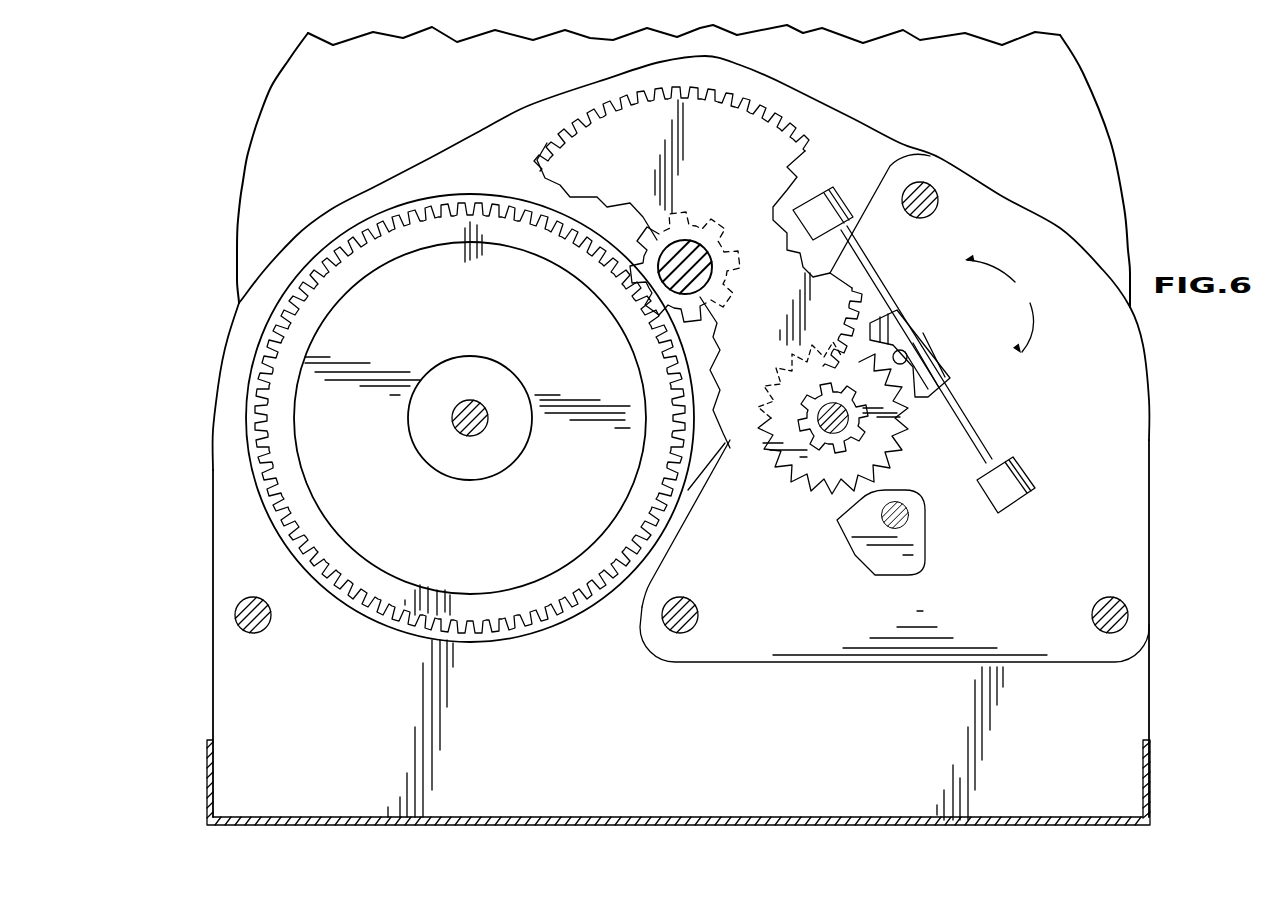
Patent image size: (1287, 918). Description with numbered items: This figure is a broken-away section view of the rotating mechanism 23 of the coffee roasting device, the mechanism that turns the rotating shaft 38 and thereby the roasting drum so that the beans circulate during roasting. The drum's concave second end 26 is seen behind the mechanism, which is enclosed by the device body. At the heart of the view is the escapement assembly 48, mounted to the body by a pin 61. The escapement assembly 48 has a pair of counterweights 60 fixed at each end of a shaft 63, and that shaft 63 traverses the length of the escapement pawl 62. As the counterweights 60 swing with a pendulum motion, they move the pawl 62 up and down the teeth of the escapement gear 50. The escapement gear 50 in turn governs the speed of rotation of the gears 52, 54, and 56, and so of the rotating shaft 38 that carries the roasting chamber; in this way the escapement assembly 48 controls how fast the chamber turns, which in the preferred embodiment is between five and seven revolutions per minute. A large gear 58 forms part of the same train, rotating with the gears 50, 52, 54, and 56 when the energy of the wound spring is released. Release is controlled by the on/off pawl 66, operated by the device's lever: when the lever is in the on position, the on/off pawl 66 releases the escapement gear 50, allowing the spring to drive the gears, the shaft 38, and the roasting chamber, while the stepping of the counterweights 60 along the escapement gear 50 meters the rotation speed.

The rotating mechanism 23 is at (1160, 359).
The second end 26 is at (1105, 149).
The rotating shaft 38 is at (713, 270).
The escapement assembly 48 is at (1003, 305).
The escapement gear 50 is at (808, 492).
The gear 52 is at (898, 452).
The gear 54 is at (547, 143).
The gear 56 is at (700, 225).
The gear 58 is at (473, 608).
The counterweights 60 is at (850, 200).
The pin 61 is at (905, 350).
The escapement pawl 62 is at (948, 353).
The shaft 63 is at (962, 420).
The on/off pawl 66 is at (925, 540).